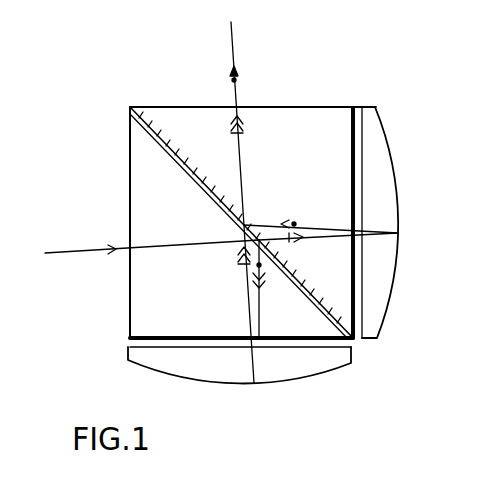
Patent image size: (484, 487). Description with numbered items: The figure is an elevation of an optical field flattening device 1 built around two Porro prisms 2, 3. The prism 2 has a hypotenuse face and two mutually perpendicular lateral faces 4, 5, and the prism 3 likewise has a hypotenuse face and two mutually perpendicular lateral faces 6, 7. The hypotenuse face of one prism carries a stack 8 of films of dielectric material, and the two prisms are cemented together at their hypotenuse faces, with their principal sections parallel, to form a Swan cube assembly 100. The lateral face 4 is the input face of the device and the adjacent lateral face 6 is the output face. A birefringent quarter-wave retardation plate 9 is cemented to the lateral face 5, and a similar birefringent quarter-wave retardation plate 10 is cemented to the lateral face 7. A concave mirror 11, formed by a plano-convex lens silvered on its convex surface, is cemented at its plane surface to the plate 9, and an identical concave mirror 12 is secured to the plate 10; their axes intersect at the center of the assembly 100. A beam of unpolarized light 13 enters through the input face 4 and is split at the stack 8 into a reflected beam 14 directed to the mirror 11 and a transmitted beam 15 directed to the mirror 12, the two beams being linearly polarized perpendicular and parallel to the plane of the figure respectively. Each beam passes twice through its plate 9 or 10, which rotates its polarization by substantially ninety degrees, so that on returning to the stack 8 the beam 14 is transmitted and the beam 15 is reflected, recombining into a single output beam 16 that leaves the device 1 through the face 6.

The device 1 is at (112, 303).
The Porro prism 2 is at (130, 146).
The Porro prism 3 is at (170, 111).
The lateral face 4 is at (130, 190).
The lateral face 5 is at (176, 336).
The lateral face 6 is at (206, 108).
The lateral face 7 is at (353, 120).
The stack of films of dielectric material 8 is at (152, 107).
The birefringent quarter-wave retardation plate 9 is at (130, 347).
The birefringent quarter-wave retardation plate 10 is at (360, 112).
The concave mirror 11 is at (158, 362).
The concave mirror 12 is at (384, 128).
The beam of unpolarized light 13 is at (149, 244).
The reflected beam 14 is at (259, 306).
The transmitted beam 15 is at (327, 243).
The output beam 16 is at (243, 202).
The Swan cube assembly 100 is at (192, 213).